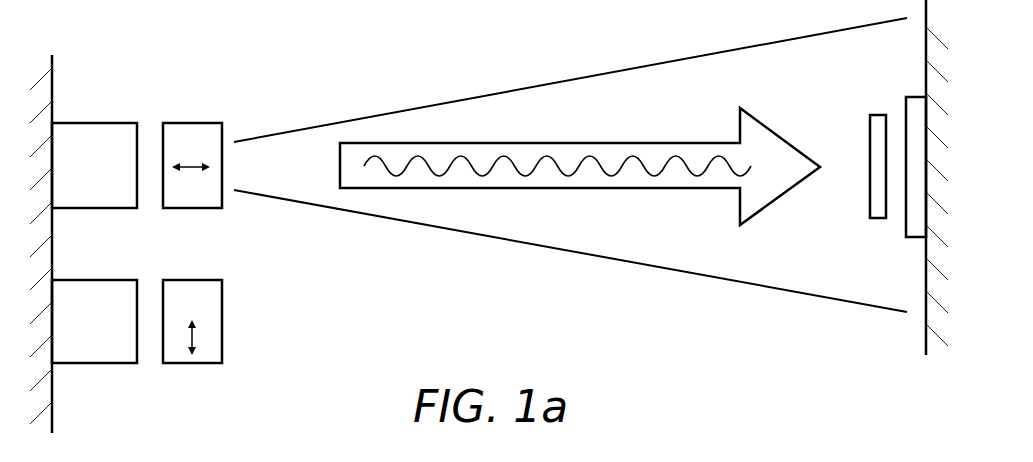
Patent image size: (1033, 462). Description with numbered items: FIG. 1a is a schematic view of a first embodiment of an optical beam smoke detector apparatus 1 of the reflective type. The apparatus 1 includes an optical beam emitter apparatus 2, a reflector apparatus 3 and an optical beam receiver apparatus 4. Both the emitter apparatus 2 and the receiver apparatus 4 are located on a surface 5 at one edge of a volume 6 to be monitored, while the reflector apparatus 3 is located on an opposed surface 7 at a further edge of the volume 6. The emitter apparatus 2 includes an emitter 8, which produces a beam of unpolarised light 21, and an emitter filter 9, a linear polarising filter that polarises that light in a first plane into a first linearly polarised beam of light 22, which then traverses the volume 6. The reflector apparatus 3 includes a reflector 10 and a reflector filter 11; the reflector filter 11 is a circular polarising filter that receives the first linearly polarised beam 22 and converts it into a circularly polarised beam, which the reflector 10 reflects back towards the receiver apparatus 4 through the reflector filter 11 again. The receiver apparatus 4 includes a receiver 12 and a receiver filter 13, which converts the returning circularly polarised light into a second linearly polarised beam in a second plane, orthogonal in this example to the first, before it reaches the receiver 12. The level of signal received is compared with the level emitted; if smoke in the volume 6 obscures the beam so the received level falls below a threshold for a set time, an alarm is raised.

The optical beam smoke detector apparatus 1 is at (416, 70).
The optical beam emitter apparatus 2 is at (137, 155).
The reflector apparatus 3 is at (867, 160).
The optical beam receiver apparatus 4 is at (137, 356).
The surface 5 is at (53, 420).
The volume to be monitored 6 is at (580, 300).
The opposed surface 7 is at (925, 337).
The emitter 8 is at (102, 178).
The emitter filter 9 is at (199, 160).
The reflector 10 is at (906, 236).
The reflector filter 11 is at (870, 205).
The receiver 12 is at (108, 333).
The receiver filter 13 is at (206, 314).
The beam of unpolarised light 21 is at (152, 176).
The first linearly polarised beam of light 22 is at (683, 190).